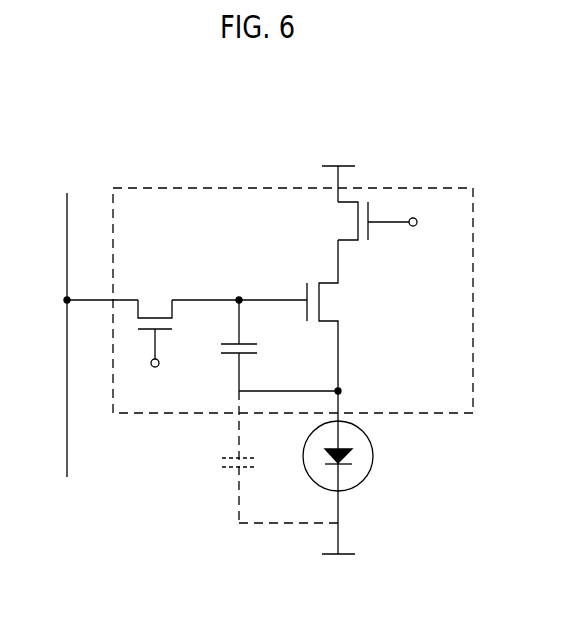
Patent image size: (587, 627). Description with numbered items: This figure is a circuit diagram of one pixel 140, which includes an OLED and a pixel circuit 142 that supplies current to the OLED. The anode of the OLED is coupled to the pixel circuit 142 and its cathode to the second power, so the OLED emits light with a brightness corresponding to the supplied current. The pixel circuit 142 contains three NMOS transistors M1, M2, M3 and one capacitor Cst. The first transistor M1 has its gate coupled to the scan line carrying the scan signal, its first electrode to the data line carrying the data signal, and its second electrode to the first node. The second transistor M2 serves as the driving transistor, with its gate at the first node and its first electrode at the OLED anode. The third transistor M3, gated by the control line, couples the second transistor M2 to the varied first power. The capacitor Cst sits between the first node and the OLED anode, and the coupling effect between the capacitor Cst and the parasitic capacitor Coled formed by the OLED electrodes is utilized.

The pixel 140 is at (428, 100).
The pixel circuit 142 is at (428, 188).
The first transistor M1 is at (161, 338).
The second transistor M2 is at (335, 315).
The third transistor M3 is at (394, 224).
The capacitor Cst is at (254, 345).
The parasitic capacitor Coled is at (254, 457).
The element OLED is at (350, 472).